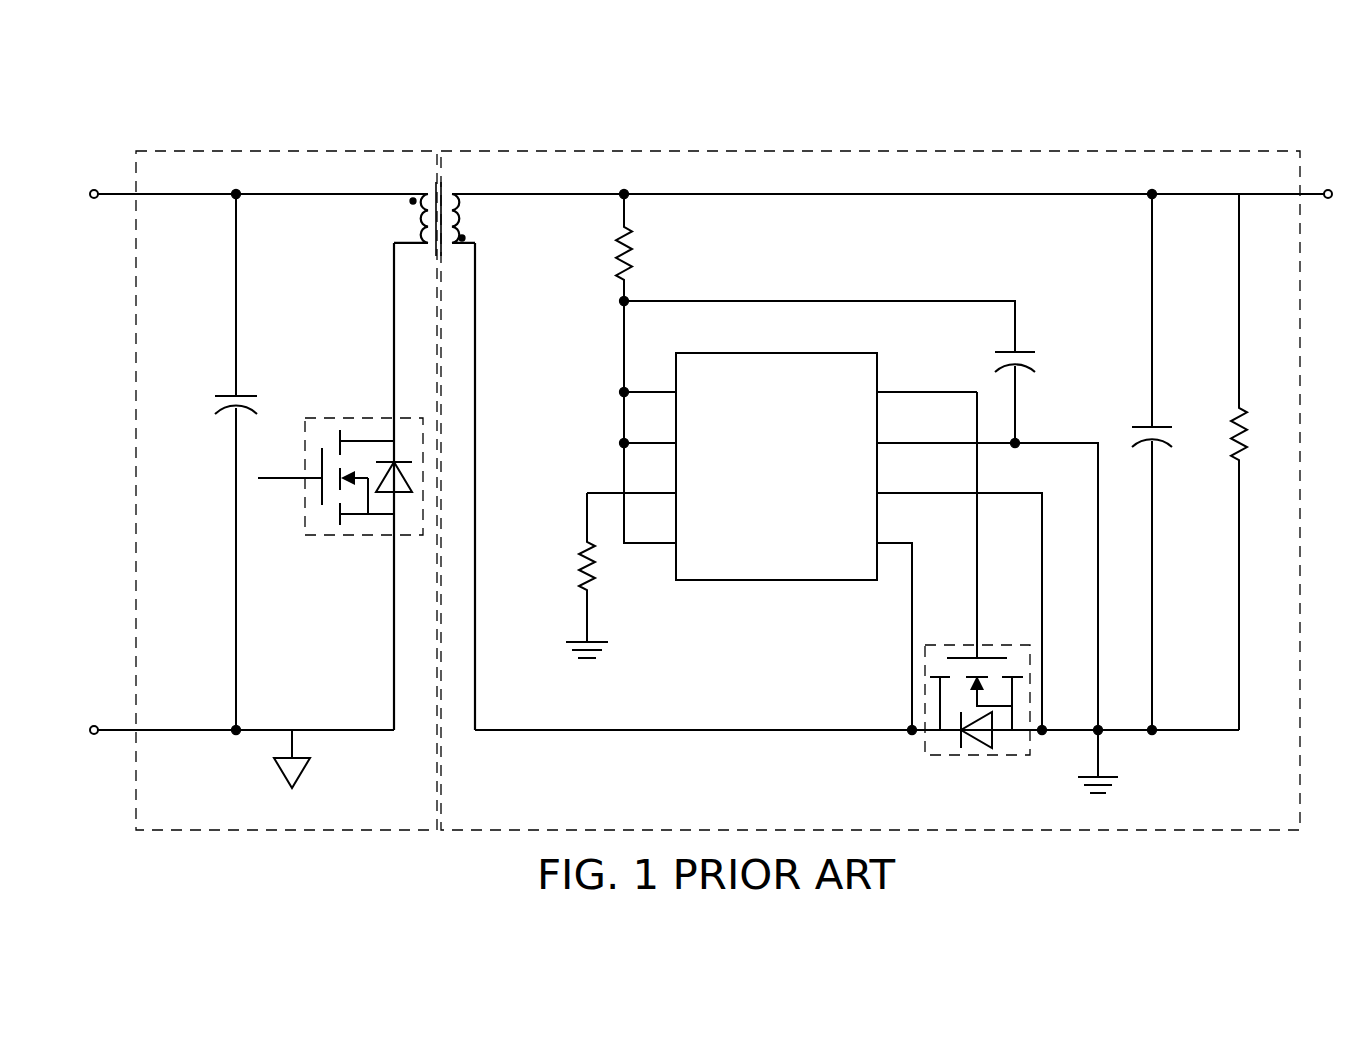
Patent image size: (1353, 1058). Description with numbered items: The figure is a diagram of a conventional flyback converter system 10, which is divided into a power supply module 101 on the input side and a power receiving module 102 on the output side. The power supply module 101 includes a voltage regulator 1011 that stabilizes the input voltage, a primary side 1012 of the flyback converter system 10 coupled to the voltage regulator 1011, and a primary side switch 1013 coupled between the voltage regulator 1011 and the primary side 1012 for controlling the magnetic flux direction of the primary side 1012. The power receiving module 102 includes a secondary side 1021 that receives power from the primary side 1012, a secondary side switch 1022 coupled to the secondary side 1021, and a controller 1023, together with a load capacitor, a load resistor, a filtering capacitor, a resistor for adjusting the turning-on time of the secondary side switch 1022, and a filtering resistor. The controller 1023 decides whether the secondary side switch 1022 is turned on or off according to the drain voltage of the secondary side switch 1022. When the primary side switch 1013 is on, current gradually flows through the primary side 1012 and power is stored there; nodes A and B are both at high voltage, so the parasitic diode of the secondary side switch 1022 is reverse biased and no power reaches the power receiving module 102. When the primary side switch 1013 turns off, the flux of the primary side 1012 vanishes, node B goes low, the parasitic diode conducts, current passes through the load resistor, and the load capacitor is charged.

The flyback converter system 10 is at (1134, 108).
The power supply module 101 is at (265, 150).
The power receiving module 102 is at (882, 150).
The voltage regulator 1011 is at (217, 405).
The primary side 1012 is at (410, 229).
The primary side switch 1013 is at (349, 538).
The secondary side 1021 is at (470, 215).
The secondary side switch 1022 is at (995, 757).
The controller 1023 is at (775, 582).